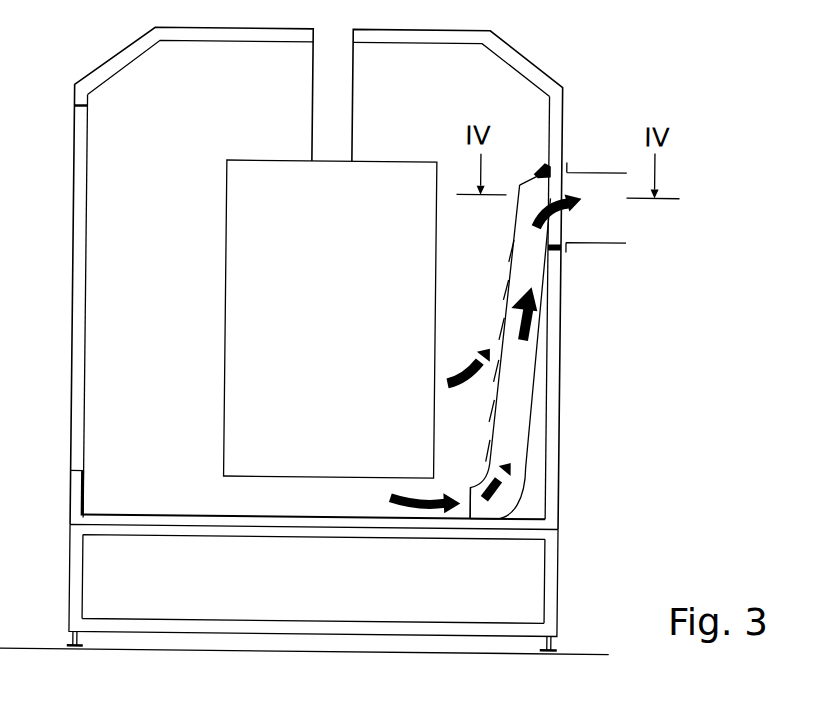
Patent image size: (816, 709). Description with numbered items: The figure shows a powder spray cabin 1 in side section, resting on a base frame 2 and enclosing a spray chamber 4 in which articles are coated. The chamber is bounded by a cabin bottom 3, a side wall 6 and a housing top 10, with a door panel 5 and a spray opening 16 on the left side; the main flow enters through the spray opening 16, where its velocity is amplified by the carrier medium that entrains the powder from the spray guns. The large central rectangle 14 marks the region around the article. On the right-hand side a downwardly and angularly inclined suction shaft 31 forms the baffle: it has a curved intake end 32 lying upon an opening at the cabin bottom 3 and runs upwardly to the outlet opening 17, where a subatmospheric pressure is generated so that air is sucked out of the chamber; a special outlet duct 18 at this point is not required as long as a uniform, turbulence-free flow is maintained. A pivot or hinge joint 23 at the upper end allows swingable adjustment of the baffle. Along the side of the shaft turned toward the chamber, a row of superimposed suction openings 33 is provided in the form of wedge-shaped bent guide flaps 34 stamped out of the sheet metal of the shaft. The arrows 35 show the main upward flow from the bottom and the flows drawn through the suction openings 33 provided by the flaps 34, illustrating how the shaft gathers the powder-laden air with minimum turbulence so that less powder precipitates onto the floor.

The drying apparatus 1 is at (591, 316).
The base frame 2 is at (570, 570).
The cabin bottom 3 is at (165, 514).
The spray chamber 4 is at (168, 152).
The door sealing strip 5 is at (84, 494).
The side wall 6 is at (552, 497).
The housing top cover 10 is at (523, 39).
The treatment chamber 14 is at (288, 240).
The spray opening 16 is at (77, 280).
The outlet opening 17 is at (555, 225).
The outlet duct 18 is at (612, 200).
The pivot or hinge joint 23 is at (533, 166).
The air channel 31 is at (533, 397).
The curved intake end 32 is at (468, 498).
The suction openings 33 is at (507, 292).
The guide flaps 34 is at (510, 243).
The arrows 35 is at (407, 498).